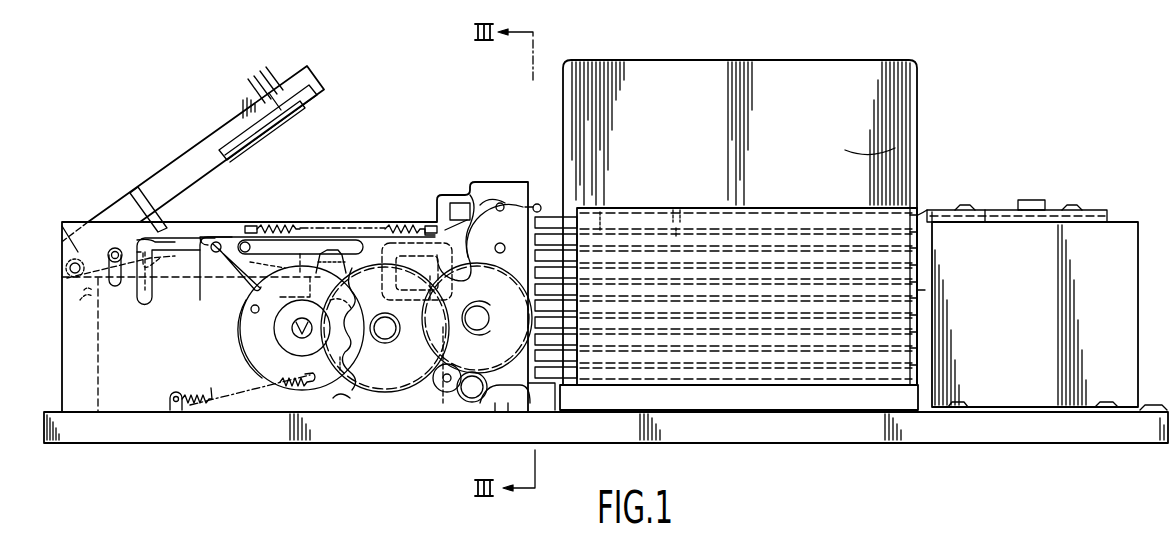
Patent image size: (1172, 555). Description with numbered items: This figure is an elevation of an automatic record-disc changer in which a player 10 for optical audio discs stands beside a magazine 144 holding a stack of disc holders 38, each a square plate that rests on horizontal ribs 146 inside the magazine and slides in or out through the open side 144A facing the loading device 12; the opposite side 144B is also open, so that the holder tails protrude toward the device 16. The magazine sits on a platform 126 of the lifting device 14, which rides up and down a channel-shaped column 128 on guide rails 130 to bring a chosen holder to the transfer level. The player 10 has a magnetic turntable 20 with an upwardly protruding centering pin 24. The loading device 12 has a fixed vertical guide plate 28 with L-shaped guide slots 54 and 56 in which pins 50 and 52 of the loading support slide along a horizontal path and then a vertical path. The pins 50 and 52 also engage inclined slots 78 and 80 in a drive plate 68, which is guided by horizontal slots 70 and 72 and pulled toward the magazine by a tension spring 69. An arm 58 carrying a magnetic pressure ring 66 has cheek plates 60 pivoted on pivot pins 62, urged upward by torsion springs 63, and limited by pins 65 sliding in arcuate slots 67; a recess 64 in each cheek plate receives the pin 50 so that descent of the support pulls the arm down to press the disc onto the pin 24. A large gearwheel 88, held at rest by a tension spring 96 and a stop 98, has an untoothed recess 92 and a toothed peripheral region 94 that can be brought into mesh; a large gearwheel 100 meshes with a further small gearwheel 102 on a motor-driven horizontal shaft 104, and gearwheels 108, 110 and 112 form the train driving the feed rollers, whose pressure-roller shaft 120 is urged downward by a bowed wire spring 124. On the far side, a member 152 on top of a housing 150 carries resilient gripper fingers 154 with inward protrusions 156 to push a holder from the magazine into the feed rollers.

The player 10 is at (350, 250).
The loading device 12 is at (515, 203).
The device for raising and lowering the magazine 14 is at (830, 58).
The device for initial displacement of the holder 16 is at (1081, 203).
The turntable 20 is at (301, 238).
The centering pin 24 is at (334, 250).
The guide plate 28 is at (188, 230).
The disc holder 38 is at (548, 216).
The pin 50 is at (220, 243).
The pin 52 is at (443, 222).
The guide slot 54 is at (184, 250).
The guide slot 56 is at (417, 274).
The arm 58 is at (163, 173).
The cheek plate 60 is at (132, 217).
The pivot pin 62 is at (72, 275).
The torsion spring 63 is at (92, 305).
The recess 64 is at (148, 241).
The pin 65 is at (114, 250).
The magnetic pressure ring 66 is at (285, 125).
The arcuate slot 67 is at (118, 285).
The drive plate 68 is at (271, 317).
The tension spring 69 is at (280, 224).
The horizontal slot 70 is at (286, 240).
The horizontal slot 72 is at (412, 232).
The inclined slot 78 is at (203, 310).
The inclined slot 80 is at (455, 203).
The large gearwheel 88 is at (240, 332).
The recess 92 is at (353, 367).
The peripheral region 94 is at (365, 350).
The tension spring 96 is at (217, 393).
The stop 98 is at (255, 314).
The large gearwheel 100 is at (377, 397).
The further small gearwheel 102 is at (440, 390).
The horizontal shaft 104 is at (450, 372).
The small gearwheel 108 is at (470, 402).
The small gearwheel 110 is at (508, 397).
The large gearwheel 112 is at (505, 384).
The horizontal shaft 120 is at (514, 224).
The bowed wire spring 124 is at (488, 203).
The platform 126 is at (553, 404).
The column 128 is at (895, 148).
The guide rail 130 is at (563, 113).
The magazine 144 is at (760, 210).
The open side of the magazine 144A is at (572, 282).
The opposite open side of the magazine 144B is at (925, 290).
The horizontal rib 146 is at (676, 212).
The housing 150 is at (1115, 228).
The member 152 is at (986, 212).
The resilient finger 154 is at (934, 212).
The protrusion 156 is at (924, 212).